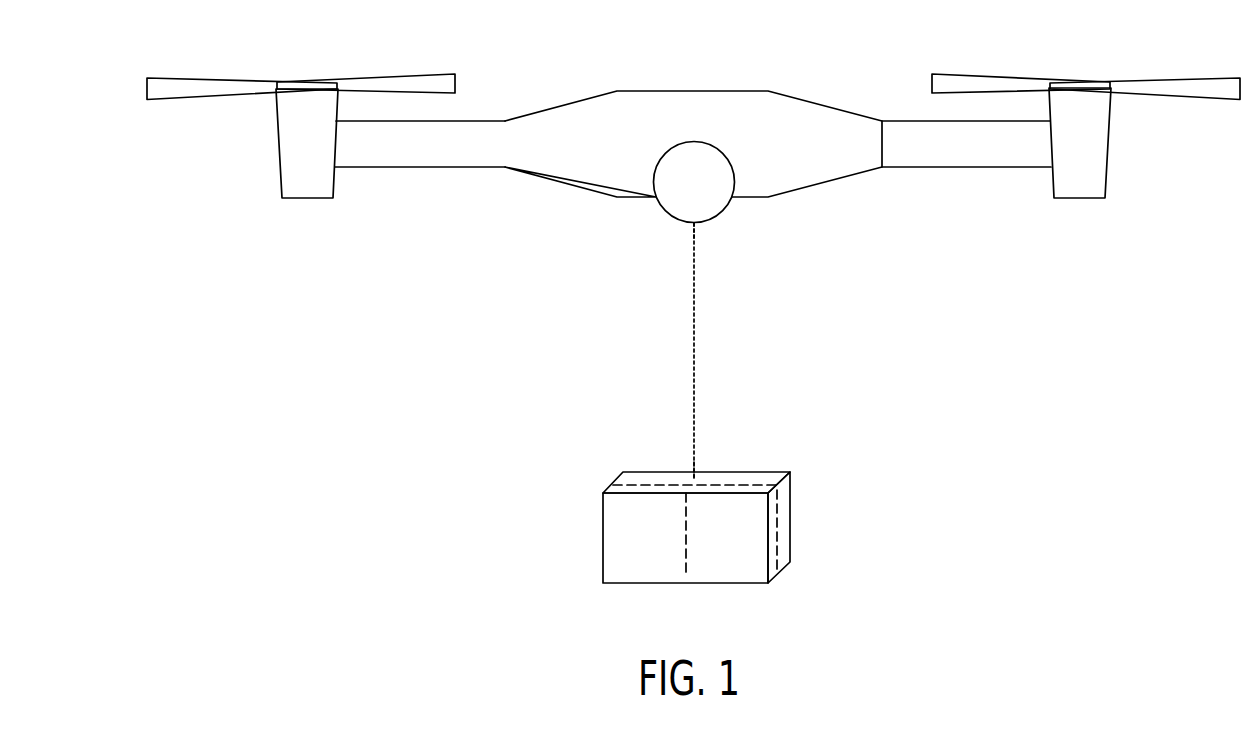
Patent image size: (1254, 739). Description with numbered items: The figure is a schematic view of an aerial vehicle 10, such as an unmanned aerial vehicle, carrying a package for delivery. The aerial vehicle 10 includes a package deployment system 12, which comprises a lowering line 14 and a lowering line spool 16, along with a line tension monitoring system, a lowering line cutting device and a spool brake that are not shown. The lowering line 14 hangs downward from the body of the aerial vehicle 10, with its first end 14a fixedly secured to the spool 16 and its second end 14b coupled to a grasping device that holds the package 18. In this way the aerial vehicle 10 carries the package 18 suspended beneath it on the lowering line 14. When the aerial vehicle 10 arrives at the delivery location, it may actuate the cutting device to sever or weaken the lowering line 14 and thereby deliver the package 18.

The aerial vehicle 10 is at (386, 337).
The package deployment system 12 is at (1107, 517).
The lowering line 14 is at (704, 388).
The first end of the lowering line 14a is at (686, 223).
The second end of the lowering line 14b is at (690, 484).
The lowering line spool 16 is at (716, 135).
The package 18 is at (603, 548).